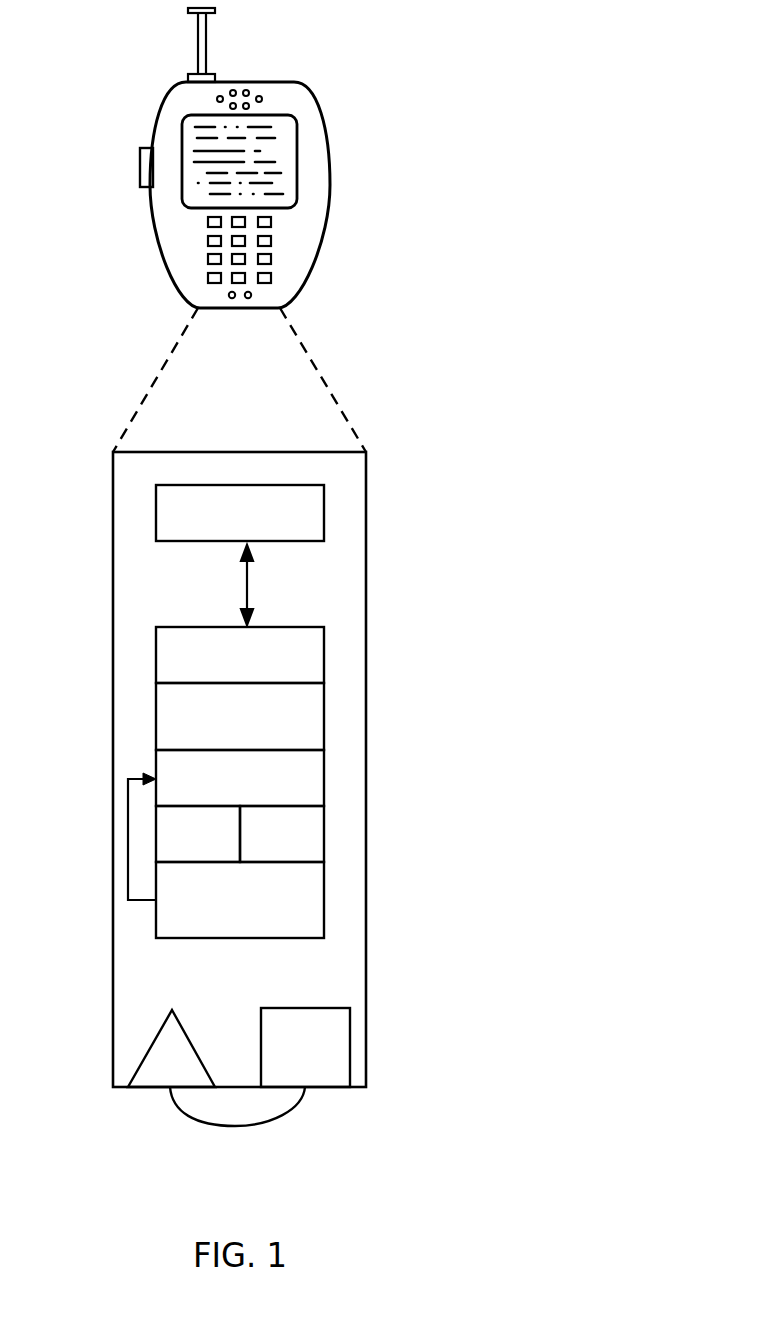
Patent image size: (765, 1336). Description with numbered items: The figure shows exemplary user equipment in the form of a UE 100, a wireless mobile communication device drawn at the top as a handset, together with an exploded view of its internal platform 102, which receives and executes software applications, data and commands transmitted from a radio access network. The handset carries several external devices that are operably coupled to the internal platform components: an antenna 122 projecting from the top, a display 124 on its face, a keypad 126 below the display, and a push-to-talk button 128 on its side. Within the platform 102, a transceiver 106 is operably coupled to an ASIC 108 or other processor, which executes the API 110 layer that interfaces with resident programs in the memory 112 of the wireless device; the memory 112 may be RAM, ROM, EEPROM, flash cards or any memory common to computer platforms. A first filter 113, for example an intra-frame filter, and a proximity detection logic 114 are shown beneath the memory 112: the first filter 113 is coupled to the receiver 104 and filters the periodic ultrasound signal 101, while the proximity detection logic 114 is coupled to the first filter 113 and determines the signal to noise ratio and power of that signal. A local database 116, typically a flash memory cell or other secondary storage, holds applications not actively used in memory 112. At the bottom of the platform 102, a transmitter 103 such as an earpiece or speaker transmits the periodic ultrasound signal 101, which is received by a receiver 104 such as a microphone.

The UE 100 is at (303, 290).
The periodic ultrasound signal 101 is at (206, 1125).
The platform 102 is at (113, 560).
The transmitter 103 is at (153, 1071).
The receiver 104 is at (286, 1061).
The transceiver 106 is at (324, 512).
The ASIC 108 is at (324, 653).
The API 110 is at (324, 711).
The memory 112 is at (324, 766).
The first filter 113 is at (178, 848).
The proximity detection logic 114 is at (261, 848).
The local database 116 is at (324, 896).
The antenna 122 is at (207, 31).
The display 124 is at (297, 160).
The keypad 126 is at (271, 241).
The push-to-talk button 128 is at (140, 168).